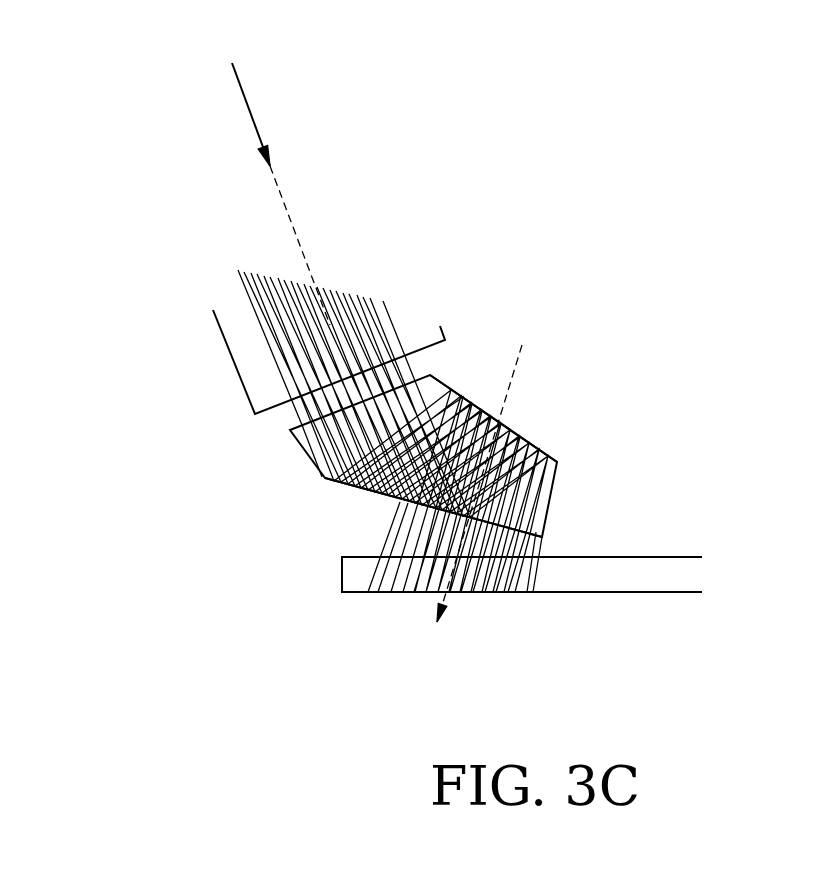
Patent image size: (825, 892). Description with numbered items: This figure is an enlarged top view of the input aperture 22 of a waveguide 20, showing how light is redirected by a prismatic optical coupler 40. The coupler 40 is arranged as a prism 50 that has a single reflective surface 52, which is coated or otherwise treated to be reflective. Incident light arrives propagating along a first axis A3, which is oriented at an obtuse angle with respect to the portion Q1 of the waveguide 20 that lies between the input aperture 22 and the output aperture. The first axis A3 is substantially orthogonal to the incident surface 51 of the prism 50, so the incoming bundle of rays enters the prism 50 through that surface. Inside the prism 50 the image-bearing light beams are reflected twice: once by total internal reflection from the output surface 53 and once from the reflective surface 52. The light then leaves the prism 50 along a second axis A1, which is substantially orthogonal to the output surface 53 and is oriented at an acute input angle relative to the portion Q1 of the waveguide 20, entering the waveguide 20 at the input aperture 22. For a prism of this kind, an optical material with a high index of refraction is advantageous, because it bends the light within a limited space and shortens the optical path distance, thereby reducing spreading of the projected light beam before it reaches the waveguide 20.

The first axis A3 is at (283, 197).
The second axis A1 is at (515, 368).
The optical coupler 40 is at (542, 385).
The prism 50 is at (403, 449).
The incident surface 51 is at (408, 373).
The reflective surface 52 is at (533, 440).
The output surface 53 is at (347, 488).
The waveguide 20 is at (503, 567).
The input aperture 22 is at (393, 555).
The portion of the waveguide Q1 is at (667, 537).